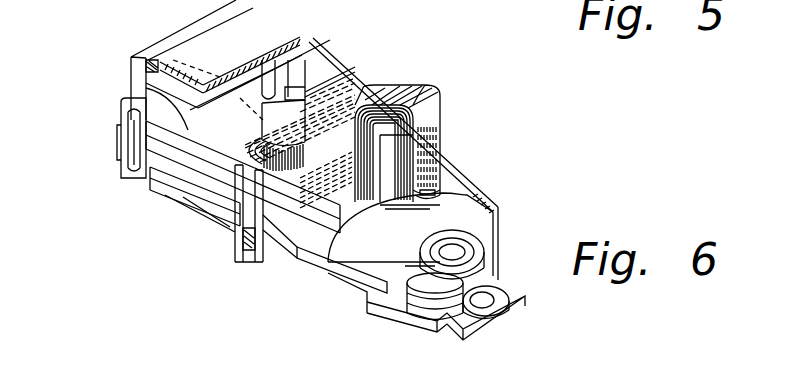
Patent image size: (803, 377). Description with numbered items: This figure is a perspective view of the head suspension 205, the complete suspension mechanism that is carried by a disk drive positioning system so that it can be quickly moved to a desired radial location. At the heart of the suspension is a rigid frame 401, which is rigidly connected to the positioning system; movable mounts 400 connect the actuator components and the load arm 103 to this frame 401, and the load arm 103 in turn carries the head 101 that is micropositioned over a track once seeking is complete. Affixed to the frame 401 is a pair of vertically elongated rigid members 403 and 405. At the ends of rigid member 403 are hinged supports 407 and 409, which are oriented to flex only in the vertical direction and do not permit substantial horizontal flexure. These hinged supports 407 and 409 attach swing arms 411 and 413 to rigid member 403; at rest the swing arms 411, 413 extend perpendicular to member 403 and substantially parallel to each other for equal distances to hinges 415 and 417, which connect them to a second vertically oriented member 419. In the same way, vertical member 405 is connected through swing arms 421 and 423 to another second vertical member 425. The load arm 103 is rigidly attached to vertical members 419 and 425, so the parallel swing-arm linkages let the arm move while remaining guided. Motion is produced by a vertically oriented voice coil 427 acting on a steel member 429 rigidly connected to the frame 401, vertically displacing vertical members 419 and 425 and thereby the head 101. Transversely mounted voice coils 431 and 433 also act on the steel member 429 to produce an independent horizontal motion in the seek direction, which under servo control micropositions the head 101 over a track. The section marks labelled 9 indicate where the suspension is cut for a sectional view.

The section line 9- 9 is at (320, 313).
The head 101 is at (522, 290).
The load arm 103 is at (462, 138).
The suspension 205 is at (528, 216).
The movable mounts 400 is at (162, 213).
The frame 401 is at (150, 47).
The rigid member 403 is at (130, 98).
The rigid member 405 is at (313, 55).
The hinged support 407 is at (140, 110).
The hinged support 409 is at (143, 183).
The swing arm 411 is at (143, 88).
The swing arm 413 is at (200, 218).
The hinge 415 is at (207, 215).
The hinge 417 is at (237, 248).
The vertical member 419 is at (240, 255).
The swing arm 421 is at (330, 55).
The swing arm 423 is at (372, 55).
The vertical member 425 is at (403, 80).
The voice coil 427 is at (171, 28).
The steel member 429 is at (337, 303).
The voice coil 431 is at (462, 136).
The voice coil 433 is at (272, 267).